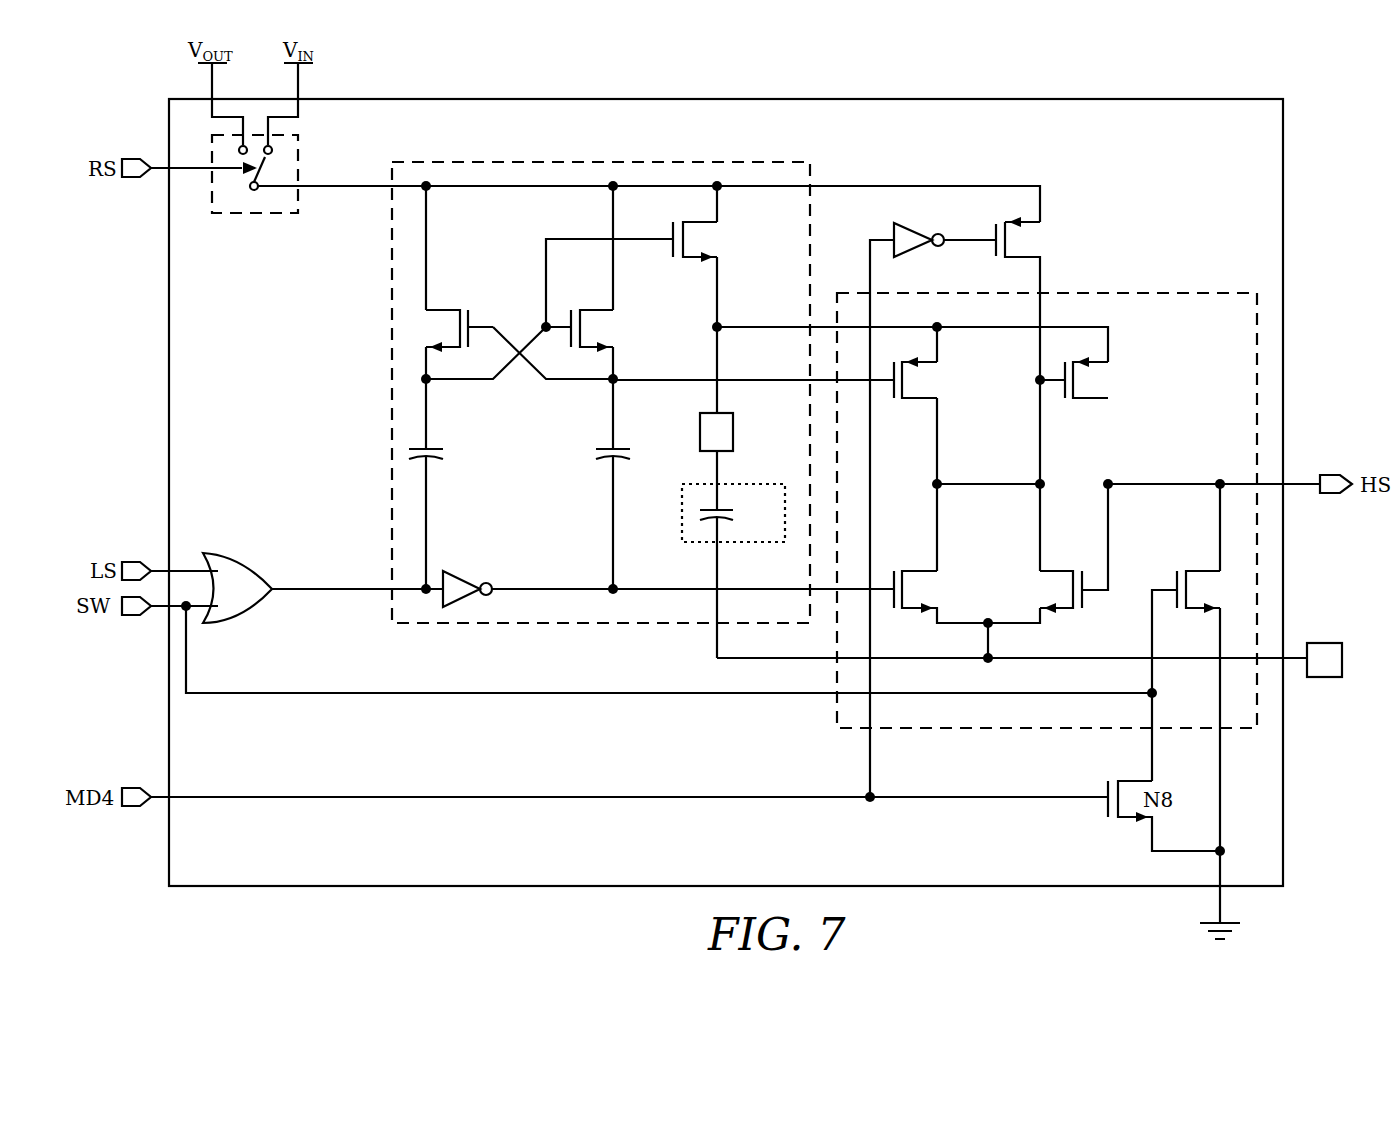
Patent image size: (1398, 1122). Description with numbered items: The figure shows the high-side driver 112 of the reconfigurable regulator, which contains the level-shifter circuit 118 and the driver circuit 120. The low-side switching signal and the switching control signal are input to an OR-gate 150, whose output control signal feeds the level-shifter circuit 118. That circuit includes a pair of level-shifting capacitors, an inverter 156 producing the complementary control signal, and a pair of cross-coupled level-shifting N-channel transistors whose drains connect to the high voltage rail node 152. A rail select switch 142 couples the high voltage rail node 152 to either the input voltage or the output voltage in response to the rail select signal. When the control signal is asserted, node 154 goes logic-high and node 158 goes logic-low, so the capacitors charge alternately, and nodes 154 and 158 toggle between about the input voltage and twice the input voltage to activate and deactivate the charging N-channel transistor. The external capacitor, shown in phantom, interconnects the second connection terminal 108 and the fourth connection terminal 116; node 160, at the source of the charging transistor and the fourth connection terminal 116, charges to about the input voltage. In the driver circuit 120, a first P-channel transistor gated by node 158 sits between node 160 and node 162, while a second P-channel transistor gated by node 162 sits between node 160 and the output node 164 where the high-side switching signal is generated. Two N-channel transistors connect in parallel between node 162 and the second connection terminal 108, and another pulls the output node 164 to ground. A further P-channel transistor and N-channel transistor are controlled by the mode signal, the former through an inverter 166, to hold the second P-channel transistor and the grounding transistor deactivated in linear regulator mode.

The high-side driver 112 is at (526, 99).
The rail select switch 142 is at (281, 214).
The high voltage rail node 152 is at (876, 187).
The level-shifter circuit 118 is at (390, 318).
The node 154 is at (438, 394).
The node 158 is at (603, 394).
The node 160 is at (704, 345).
The fourth connection terminal 116 is at (733, 421).
The inverter 156 is at (456, 574).
The OR-gate 150 is at (230, 556).
The inverter 166 is at (912, 224).
The driver circuit 120 is at (1182, 293).
The node 162 is at (950, 462).
The output node 164 is at (1122, 462).
The second connection terminal 108 is at (1325, 677).